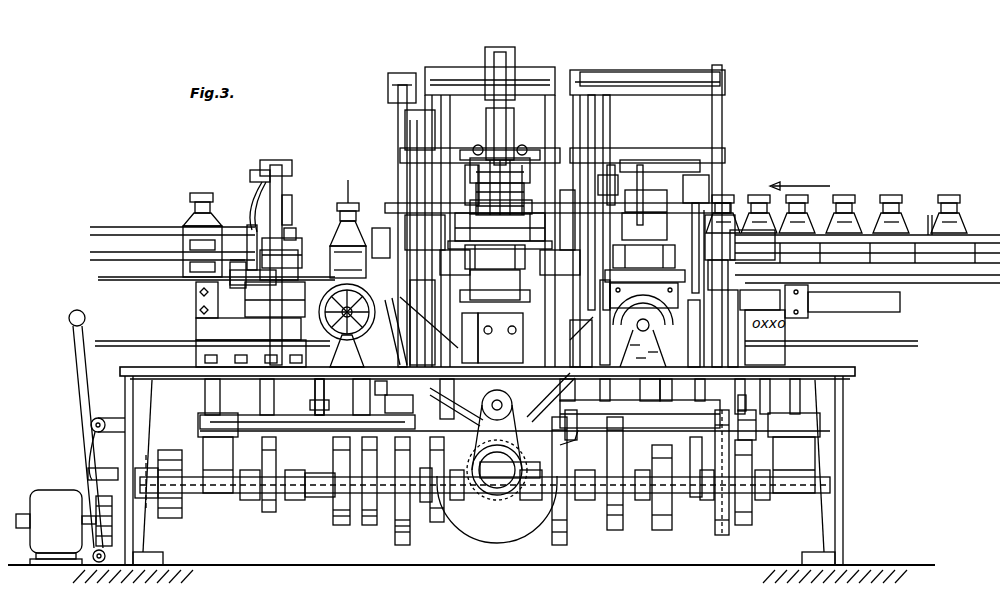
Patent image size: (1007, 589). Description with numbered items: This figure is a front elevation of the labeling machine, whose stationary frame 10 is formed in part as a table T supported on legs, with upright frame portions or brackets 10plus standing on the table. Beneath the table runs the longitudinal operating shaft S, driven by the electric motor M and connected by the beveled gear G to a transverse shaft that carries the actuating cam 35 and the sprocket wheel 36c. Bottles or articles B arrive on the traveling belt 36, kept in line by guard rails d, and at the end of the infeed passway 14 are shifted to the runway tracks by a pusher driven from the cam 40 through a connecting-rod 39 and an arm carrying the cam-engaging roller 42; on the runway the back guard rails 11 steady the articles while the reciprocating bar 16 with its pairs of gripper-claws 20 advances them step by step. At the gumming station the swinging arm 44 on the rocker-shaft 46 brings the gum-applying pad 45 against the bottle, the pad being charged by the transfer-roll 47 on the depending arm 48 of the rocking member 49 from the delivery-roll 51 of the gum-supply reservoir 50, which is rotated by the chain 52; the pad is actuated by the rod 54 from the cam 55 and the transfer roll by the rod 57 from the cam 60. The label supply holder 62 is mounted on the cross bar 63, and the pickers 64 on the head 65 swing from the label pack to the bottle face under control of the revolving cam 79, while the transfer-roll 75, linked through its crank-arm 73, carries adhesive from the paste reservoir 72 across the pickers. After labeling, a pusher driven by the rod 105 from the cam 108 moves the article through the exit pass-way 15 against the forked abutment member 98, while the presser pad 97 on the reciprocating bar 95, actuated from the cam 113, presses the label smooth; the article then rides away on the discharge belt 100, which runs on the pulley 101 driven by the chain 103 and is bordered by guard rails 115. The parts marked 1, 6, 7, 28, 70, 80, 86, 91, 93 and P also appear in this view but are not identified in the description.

The filling machine 1 is at (722, 222).
The bottle support 6 is at (347, 185).
The standard 7 is at (276, 165).
The stationary frame 10 is at (145, 405).
The upright stationary bracket 10plus is at (712, 128).
The back guard rails 11 is at (382, 237).
The infeed passway 14 is at (735, 215).
The exit pass-way 15 is at (247, 232).
The reciprocating bar 16 is at (850, 302).
The gripper-claws 20 is at (325, 268).
The bracket 28 is at (251, 324).
The actuating cam 35 is at (528, 525).
The traveling belt 36 is at (928, 284).
The sprocket wheel 36c is at (574, 442).
The connecting-rod 39 is at (742, 401).
The cam 40 is at (745, 520).
The cam-engaging roller 42 is at (741, 428).
The swinging arm 44 is at (600, 187).
The gum-applying pad 45 is at (660, 232).
The rocker-shaft 46 is at (660, 160).
The transfer-roll 47 is at (655, 200).
The depending arm 48 is at (608, 140).
The rocking member 49 is at (668, 133).
The gum-supply reservoir 50 is at (644, 256).
The delivery-roll 51 is at (625, 237).
The chain 52 is at (728, 538).
The rod 54 is at (697, 497).
The cam 55 is at (665, 530).
The rod 57 is at (570, 425).
The cam 60 is at (615, 530).
The label supply holder 62 is at (510, 150).
The cross bar 63 is at (536, 158).
The pickers 64 is at (520, 206).
The head 65 is at (484, 186).
The cam 70 is at (370, 525).
The paste reservoir 72 is at (495, 273).
The crank-arm 73 is at (437, 522).
The transfer-roll 75 is at (478, 216).
The revolving cam 79 is at (403, 540).
The bracket 80 is at (461, 330).
The cam 86 is at (565, 535).
The lever 91 is at (395, 322).
The rod 93 is at (395, 198).
The reciprocating bar 95 is at (283, 168).
The presser pad 97 is at (289, 205).
The forked abutment member 98 is at (290, 230).
The discharge belt 100 is at (135, 281).
The pulley 101 is at (347, 325).
The chain 103 is at (470, 452).
The rod 105 is at (322, 392).
The cam 108 is at (341, 525).
The cam 113 is at (268, 506).
The guard rails 115 is at (125, 257).
The bottles or articles B is at (200, 225).
The beveled gear G is at (490, 498).
The electric motor M is at (56, 527).
The pinion P is at (172, 500).
The operating shaft S is at (306, 486).
The table T is at (878, 392).
The guard rails d is at (926, 216).